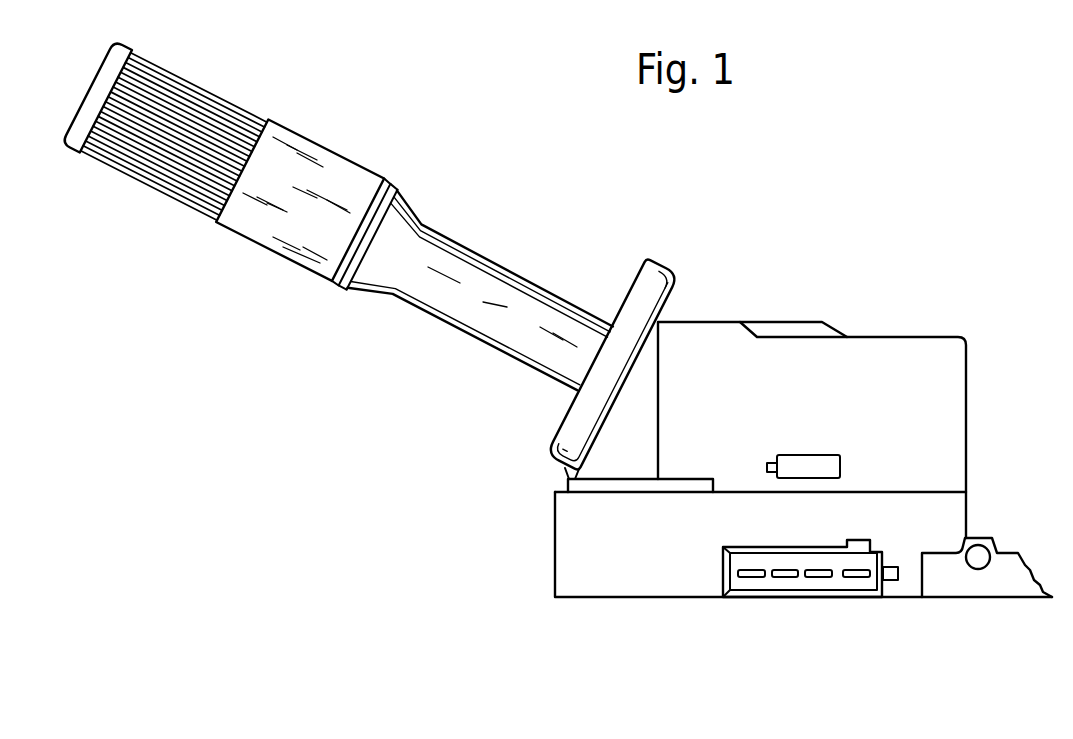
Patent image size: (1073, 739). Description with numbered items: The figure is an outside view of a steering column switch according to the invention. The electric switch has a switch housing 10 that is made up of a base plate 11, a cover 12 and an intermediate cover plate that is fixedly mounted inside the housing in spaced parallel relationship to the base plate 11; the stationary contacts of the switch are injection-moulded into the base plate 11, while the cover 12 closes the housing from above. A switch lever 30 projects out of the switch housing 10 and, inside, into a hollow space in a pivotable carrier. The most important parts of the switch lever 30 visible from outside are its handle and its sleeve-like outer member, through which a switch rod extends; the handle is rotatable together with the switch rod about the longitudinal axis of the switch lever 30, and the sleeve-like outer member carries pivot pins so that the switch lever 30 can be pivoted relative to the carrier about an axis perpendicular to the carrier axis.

The switch housing 10 is at (866, 278).
The base plate 11 is at (646, 573).
The cover 12 is at (787, 355).
The switch lever 30 is at (444, 198).